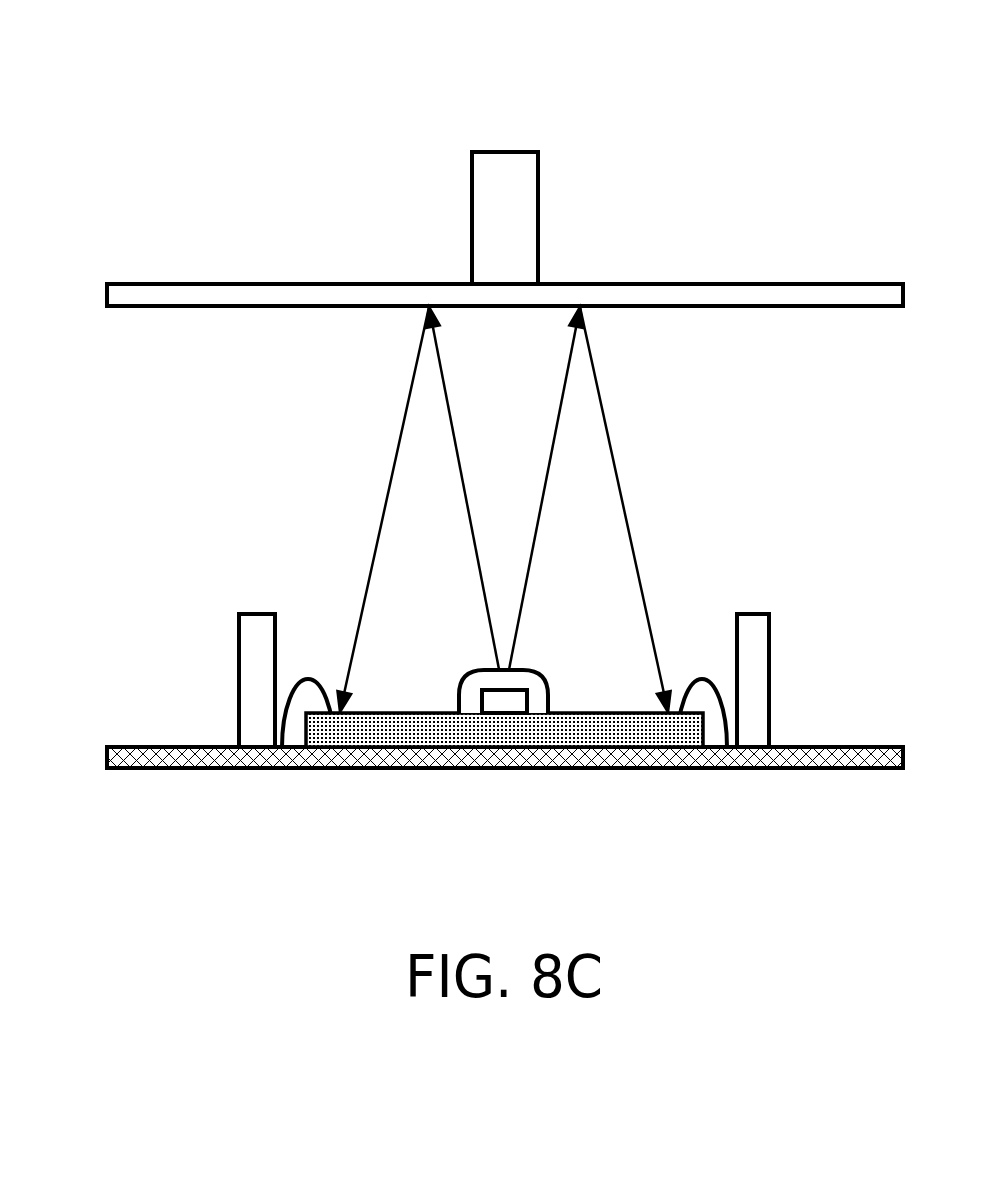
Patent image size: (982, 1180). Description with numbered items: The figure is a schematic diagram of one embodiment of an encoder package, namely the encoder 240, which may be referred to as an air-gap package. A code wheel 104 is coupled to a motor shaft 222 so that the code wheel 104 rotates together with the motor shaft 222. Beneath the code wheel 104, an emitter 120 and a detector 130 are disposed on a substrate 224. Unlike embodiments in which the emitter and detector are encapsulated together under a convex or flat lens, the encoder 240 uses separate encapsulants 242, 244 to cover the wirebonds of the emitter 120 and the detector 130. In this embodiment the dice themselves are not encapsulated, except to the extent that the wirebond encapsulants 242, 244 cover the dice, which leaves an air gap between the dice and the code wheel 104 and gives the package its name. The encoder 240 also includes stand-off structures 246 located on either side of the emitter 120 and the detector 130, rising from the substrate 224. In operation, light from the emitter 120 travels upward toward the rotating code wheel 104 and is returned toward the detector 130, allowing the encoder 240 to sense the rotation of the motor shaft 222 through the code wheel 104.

The encoder 240 is at (188, 78).
The code wheel 104 is at (792, 284).
The motor shaft 222 is at (472, 205).
The substrate 224 is at (163, 747).
The stand-off structures 246 is at (250, 620).
The encapsulant 244 is at (320, 680).
The detector 130 is at (610, 713).
The encapsulant 242 is at (462, 682).
The emitter 120 is at (515, 703).